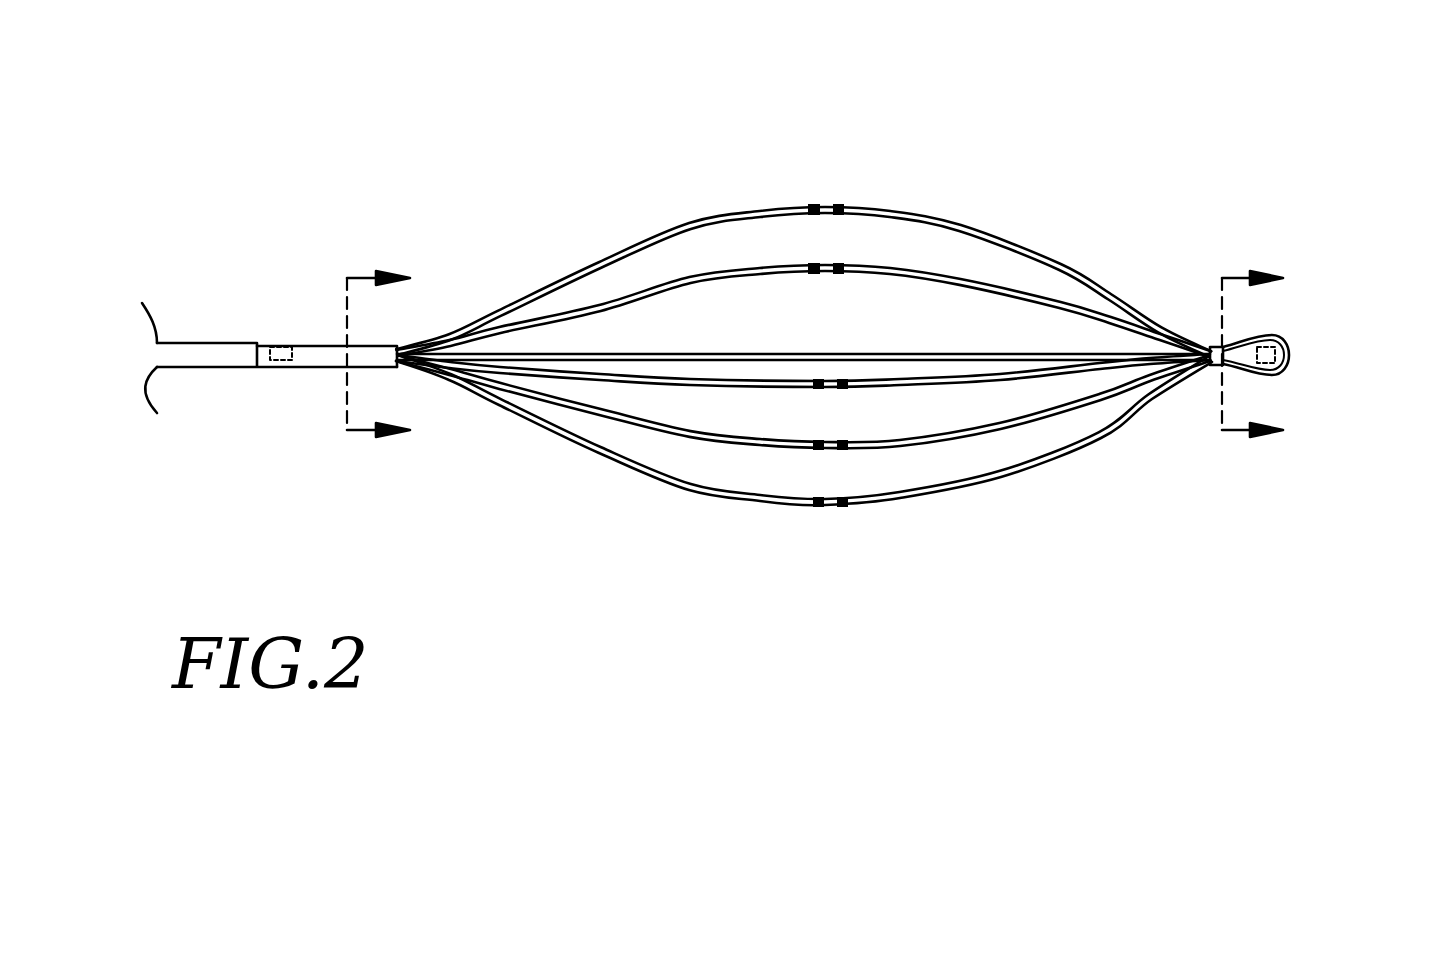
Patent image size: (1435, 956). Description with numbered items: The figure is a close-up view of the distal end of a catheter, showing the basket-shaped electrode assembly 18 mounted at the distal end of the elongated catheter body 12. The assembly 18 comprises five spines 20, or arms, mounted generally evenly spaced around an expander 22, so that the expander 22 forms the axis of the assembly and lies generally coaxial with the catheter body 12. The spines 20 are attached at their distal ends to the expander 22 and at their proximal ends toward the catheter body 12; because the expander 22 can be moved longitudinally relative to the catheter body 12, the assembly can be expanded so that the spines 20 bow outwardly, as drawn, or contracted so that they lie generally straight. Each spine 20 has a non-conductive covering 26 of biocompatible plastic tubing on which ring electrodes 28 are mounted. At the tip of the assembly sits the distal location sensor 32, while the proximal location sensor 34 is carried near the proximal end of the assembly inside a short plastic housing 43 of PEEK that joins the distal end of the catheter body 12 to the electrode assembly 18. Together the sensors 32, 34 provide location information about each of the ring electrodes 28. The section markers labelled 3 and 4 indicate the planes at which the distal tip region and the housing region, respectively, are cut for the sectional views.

The catheter body 12 is at (227, 373).
The proximal location sensor 34 is at (275, 332).
The plastic housing 43 is at (312, 343).
The basket-shaped electrode assembly 18 is at (804, 344).
The spines 20 is at (932, 213).
The expander 22 is at (658, 355).
The non-conductive covering 26 is at (994, 480).
The ring electrodes 28 is at (813, 204).
The distal location sensor 32 is at (1290, 355).
The section line 3- 3 is at (1273, 357).
The section line 4- 4 is at (398, 357).